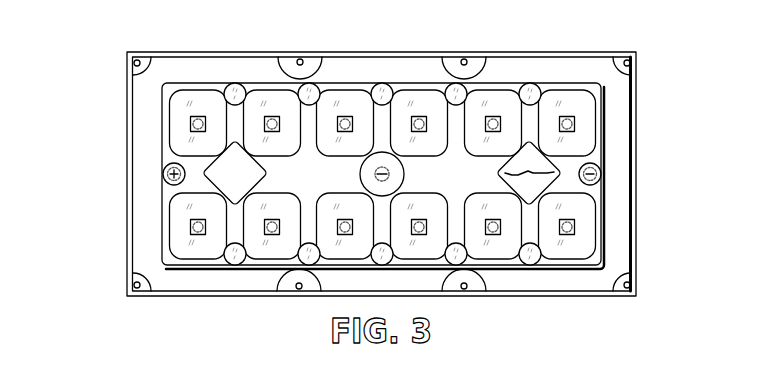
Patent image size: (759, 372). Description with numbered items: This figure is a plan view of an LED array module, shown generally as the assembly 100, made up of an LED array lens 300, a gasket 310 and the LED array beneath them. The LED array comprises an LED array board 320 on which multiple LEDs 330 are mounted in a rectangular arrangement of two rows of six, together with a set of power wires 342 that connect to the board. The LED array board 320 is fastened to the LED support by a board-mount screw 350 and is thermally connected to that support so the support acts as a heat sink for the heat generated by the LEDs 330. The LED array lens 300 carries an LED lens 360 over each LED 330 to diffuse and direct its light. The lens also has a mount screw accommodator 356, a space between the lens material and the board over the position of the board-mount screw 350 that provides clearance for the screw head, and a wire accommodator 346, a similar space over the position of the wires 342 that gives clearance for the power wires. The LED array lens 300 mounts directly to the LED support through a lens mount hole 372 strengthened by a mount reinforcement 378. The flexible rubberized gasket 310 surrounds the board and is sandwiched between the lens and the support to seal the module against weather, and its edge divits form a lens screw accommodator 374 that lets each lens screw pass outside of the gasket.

The lighting device 100 is at (94, 88).
The LED array lens 300 is at (637, 199).
The gasket 310 is at (631, 117).
The LED array board 320 is at (603, 156).
The LED 330 is at (198, 234).
The power wires 342 is at (513, 171).
The wire accommodator 346 is at (505, 188).
The board-mount screw 350 is at (392, 170).
The mount screw accommodator 356 is at (362, 168).
The LED lens 360 is at (197, 262).
The lens mount hole 372 is at (303, 60).
The lens screw accommodator 374 is at (354, 145).
The mount reinforcement 378 is at (284, 66).